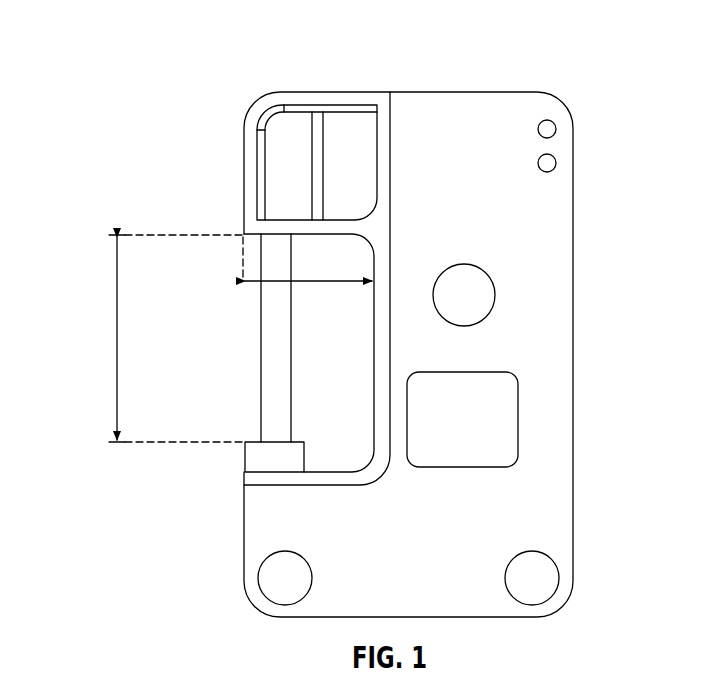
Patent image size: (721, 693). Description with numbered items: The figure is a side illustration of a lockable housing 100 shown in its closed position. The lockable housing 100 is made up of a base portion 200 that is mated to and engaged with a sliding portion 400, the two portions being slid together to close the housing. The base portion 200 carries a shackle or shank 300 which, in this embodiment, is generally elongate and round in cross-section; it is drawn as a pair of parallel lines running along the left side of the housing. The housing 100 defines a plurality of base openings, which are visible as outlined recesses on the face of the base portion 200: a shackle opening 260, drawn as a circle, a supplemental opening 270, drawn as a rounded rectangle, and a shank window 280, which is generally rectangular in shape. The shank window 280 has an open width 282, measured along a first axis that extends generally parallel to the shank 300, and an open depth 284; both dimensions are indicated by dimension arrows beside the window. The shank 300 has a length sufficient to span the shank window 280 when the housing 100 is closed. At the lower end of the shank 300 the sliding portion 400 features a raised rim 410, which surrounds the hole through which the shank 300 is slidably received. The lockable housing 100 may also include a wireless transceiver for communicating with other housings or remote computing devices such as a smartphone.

The lockable housing 100 is at (255, 50).
The base portion 200 is at (573, 382).
The shackle opening 260 is at (485, 306).
The supplemental opening 270 is at (485, 434).
The shank window 280 is at (360, 386).
The open width 282 is at (117, 338).
The open depth 284 is at (332, 285).
The shank 300 is at (261, 383).
The sliding portion 400 is at (341, 101).
The raised rim 410 is at (249, 460).